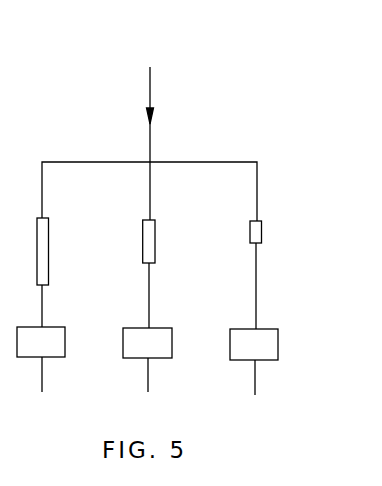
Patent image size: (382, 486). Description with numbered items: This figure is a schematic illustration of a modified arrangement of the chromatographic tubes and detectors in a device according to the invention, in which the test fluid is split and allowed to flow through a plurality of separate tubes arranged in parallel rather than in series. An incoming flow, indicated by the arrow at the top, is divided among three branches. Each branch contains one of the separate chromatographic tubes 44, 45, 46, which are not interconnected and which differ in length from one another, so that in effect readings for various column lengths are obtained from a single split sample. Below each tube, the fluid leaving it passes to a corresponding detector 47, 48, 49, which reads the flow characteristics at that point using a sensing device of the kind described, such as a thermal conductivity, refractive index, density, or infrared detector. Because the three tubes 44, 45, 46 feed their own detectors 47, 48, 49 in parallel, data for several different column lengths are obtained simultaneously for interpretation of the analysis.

The resistor 44 is at (48, 240).
The resistor 45 is at (155, 240).
The resistor 46 is at (262, 233).
The load unit 47 is at (65, 338).
The load unit 48 is at (172, 339).
The load unit 49 is at (278, 340).